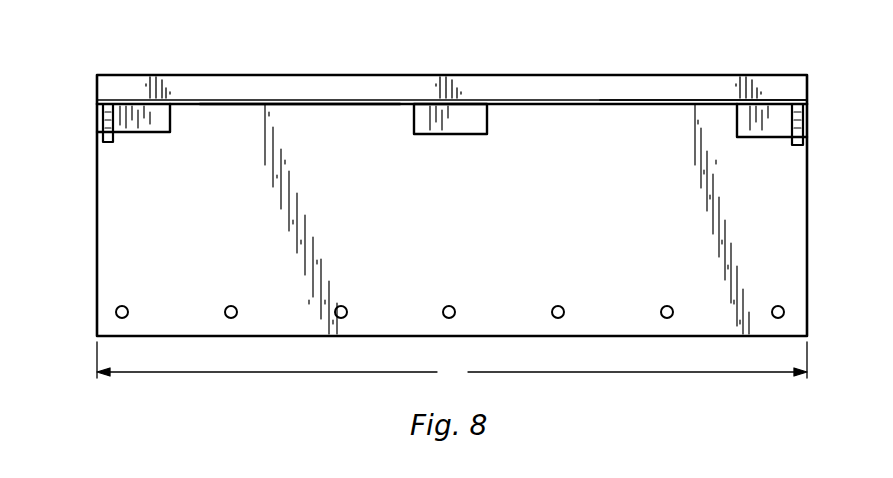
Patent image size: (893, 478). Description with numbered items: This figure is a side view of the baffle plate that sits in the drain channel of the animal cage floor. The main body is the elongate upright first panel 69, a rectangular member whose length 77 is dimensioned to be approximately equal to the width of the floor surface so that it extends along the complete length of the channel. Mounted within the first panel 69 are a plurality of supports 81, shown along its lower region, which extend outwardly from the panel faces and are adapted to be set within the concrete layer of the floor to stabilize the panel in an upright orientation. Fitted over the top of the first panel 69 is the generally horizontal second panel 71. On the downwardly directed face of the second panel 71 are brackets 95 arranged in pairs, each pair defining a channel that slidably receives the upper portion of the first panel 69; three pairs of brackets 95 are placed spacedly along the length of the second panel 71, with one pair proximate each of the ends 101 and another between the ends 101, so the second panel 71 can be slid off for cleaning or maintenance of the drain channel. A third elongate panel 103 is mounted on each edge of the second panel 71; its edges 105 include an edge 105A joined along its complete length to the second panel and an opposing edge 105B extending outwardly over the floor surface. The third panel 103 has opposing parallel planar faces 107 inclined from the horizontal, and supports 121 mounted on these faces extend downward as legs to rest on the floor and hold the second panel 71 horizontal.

The first panel 69 is at (624, 188).
The second panel 71 is at (432, 75).
The length of panel 77 is at (452, 362).
The supports 81 is at (341, 305).
The brackets 95 is at (157, 128).
The ends of panel 101 is at (97, 203).
The third elongate panel 103 is at (307, 75).
The edges 105 is at (565, 100).
The edge 105A is at (703, 75).
The edge 105B is at (352, 104).
The planar faces 107 is at (235, 75).
The supports 121 is at (97, 122).